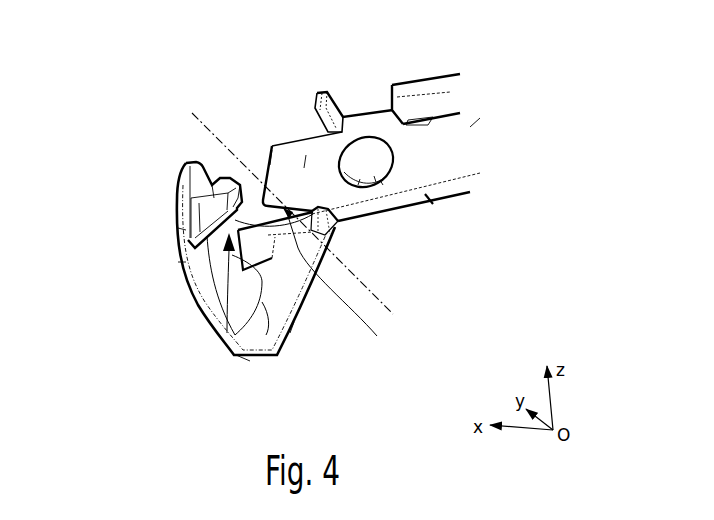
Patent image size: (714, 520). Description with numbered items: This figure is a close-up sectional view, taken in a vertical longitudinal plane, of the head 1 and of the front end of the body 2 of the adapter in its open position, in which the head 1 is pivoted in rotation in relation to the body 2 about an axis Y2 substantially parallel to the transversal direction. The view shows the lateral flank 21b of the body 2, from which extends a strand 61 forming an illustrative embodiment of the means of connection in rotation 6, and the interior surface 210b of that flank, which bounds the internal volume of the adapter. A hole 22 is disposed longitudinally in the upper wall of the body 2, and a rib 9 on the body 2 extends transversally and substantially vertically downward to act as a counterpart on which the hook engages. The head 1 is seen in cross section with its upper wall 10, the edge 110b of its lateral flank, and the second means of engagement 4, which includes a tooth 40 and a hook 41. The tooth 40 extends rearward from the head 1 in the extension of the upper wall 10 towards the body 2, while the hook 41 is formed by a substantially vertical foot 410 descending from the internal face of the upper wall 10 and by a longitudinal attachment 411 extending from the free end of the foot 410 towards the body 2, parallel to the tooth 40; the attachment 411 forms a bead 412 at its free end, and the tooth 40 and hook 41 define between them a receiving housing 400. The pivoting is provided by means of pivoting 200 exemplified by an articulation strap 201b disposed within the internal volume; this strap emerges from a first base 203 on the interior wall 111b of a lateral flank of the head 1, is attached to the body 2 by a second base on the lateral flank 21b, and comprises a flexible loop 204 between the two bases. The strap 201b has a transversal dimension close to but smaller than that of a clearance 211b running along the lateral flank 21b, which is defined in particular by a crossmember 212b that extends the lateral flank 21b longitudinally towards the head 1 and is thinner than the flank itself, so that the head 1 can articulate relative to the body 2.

The axis Y2 is at (192, 113).
The head 1 is at (162, 260).
The body 2 is at (473, 124).
The second means of engagement 4 is at (169, 170).
The means of connection in rotation 6 is at (399, 166).
The rib 9 is at (325, 93).
The upper wall 10 is at (175, 229).
The hole 22 is at (370, 99).
The tooth 40 is at (186, 162).
The hook 41 is at (216, 298).
The strand 61 is at (380, 180).
The means of pivoting 200 is at (360, 229).
The first base 203 is at (235, 339).
The flexible loop 204 is at (341, 231).
The receiving housing 400 is at (197, 163).
The foot 410 is at (212, 270).
The attachment 411 is at (274, 260).
The bead 412 is at (227, 178).
The edge of the lateral flank 110b is at (291, 334).
The interior wall 111b is at (250, 361).
The articulation strap 201b is at (272, 148).
The interior surface 210b is at (450, 157).
The clearance 211b is at (320, 285).
The crossmember 212b is at (304, 168).
The lateral flank 21b is at (430, 198).